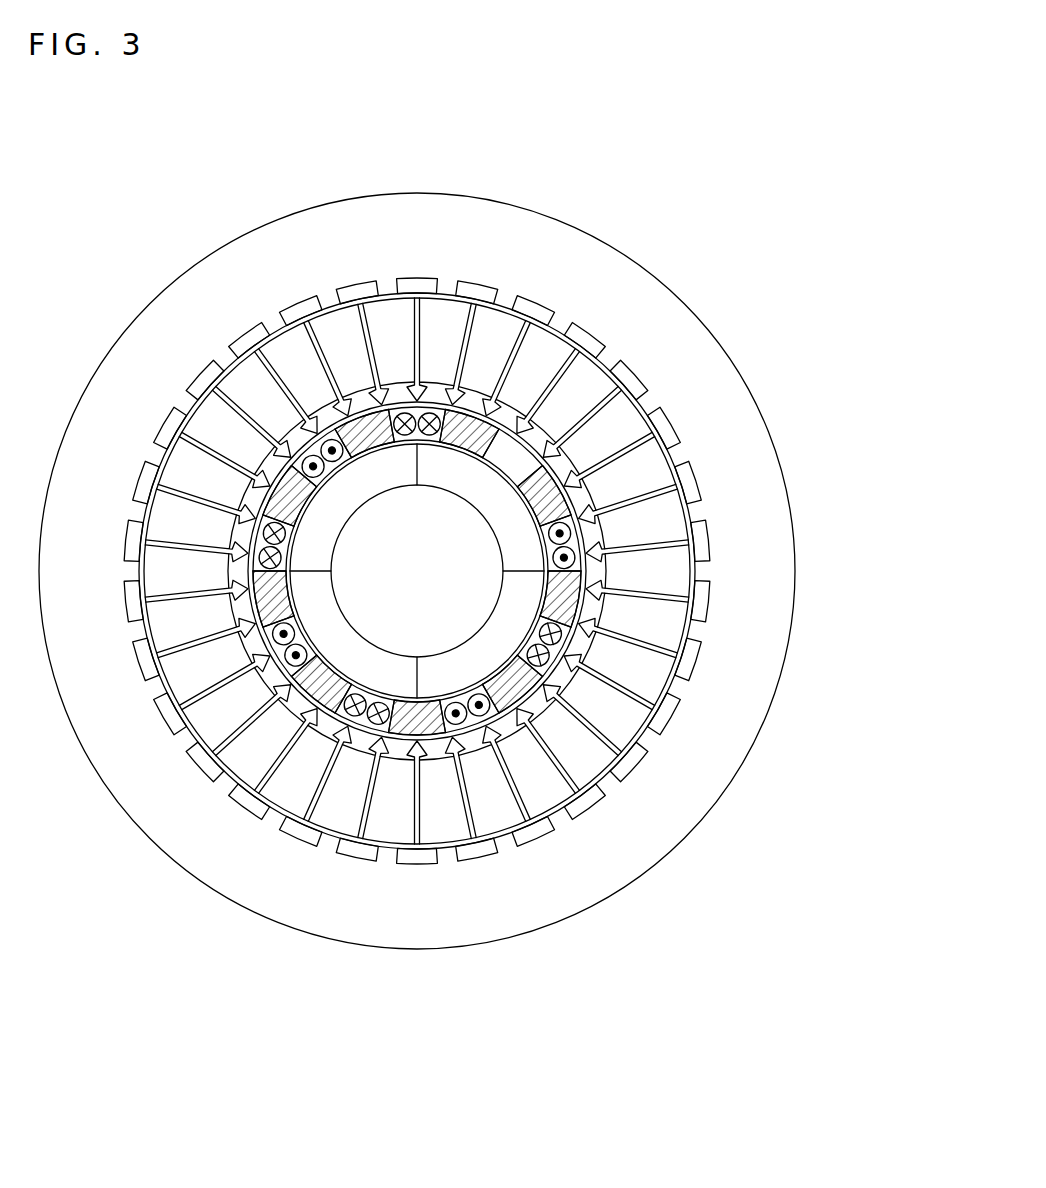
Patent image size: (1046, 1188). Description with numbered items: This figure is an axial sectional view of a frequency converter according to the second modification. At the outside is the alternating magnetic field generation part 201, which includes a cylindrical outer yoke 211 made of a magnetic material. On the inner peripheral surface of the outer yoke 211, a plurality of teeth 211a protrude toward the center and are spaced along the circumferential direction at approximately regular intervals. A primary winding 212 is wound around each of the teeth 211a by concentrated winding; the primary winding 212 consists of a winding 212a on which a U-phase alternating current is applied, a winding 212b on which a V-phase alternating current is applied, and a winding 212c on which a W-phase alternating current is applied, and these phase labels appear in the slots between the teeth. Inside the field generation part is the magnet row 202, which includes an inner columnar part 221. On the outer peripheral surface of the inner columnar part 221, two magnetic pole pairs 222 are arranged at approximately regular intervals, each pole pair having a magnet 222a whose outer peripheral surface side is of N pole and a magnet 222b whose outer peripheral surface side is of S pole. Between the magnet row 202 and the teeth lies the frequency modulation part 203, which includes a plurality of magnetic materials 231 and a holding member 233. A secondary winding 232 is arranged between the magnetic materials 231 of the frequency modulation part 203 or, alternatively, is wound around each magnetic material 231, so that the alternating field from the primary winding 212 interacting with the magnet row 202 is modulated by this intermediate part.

The alternating magnetic field generation part 201 is at (489, 196).
The magnet row 202 is at (187, 437).
The frequency modulation part 203 is at (429, 722).
The outer yoke 211 is at (540, 245).
The teeth 211a is at (563, 320).
The primary winding 212 is at (841, 351).
The winding 212a is at (660, 453).
The winding 212b is at (632, 414).
The winding 212c is at (600, 378).
The inner columnar part 221 is at (317, 527).
The magnetic pole pairs 222 is at (412, 152).
The magnet 222a is at (462, 465).
The magnet 222b is at (382, 468).
The magnetic materials 231 is at (518, 680).
The secondary winding 232 is at (457, 712).
The holding member 233 is at (580, 657).